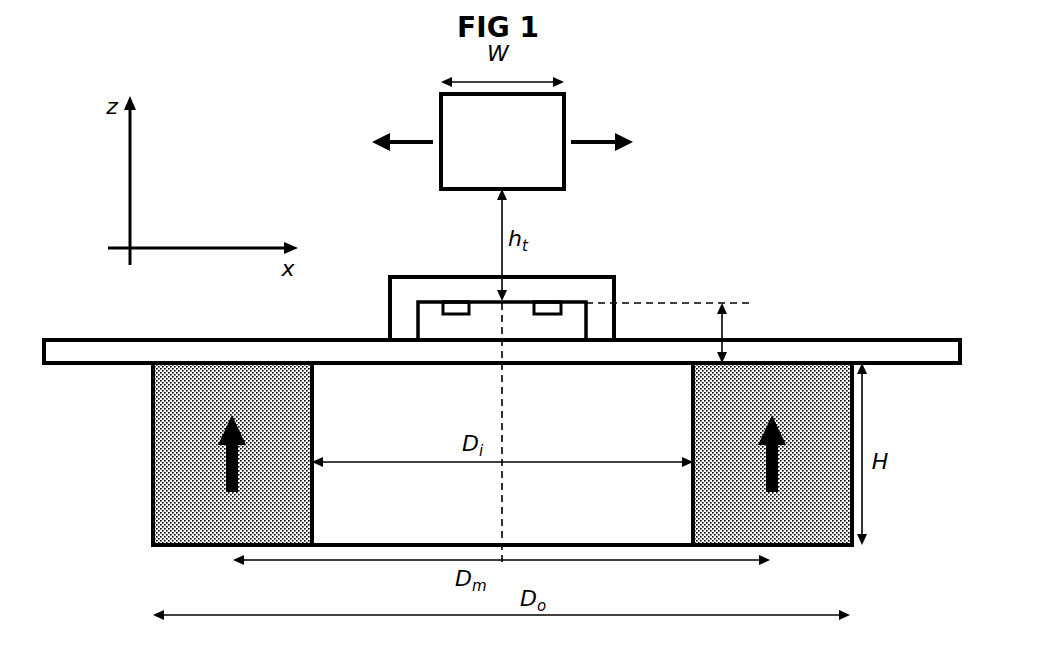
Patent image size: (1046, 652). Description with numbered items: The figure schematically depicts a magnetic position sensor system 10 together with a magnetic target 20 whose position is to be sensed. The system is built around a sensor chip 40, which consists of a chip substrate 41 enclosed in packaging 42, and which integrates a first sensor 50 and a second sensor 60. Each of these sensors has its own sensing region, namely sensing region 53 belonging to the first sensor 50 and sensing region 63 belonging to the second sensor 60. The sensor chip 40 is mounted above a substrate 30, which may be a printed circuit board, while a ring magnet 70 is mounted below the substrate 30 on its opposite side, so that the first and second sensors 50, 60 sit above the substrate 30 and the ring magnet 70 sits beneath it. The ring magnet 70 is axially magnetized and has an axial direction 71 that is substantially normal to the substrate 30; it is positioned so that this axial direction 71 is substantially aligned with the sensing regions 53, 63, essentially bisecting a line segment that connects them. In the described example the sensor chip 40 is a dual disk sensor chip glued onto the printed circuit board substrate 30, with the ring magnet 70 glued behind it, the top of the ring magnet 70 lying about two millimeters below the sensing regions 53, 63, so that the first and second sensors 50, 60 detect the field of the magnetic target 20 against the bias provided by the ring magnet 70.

The magnetic position sensor system 10 is at (813, 201).
The magnetic target 20 is at (489, 155).
The substrate 30 is at (98, 350).
The sensor chip 40 is at (524, 320).
The chip substrate 41 is at (490, 318).
The packaging 42 is at (402, 317).
The first sensor 50 is at (453, 306).
The sensing region 53 is at (465, 290).
The second sensor 60 is at (553, 306).
The sensing region 63 is at (545, 290).
The ring magnet 70 is at (163, 498).
The axial direction 71 is at (503, 495).